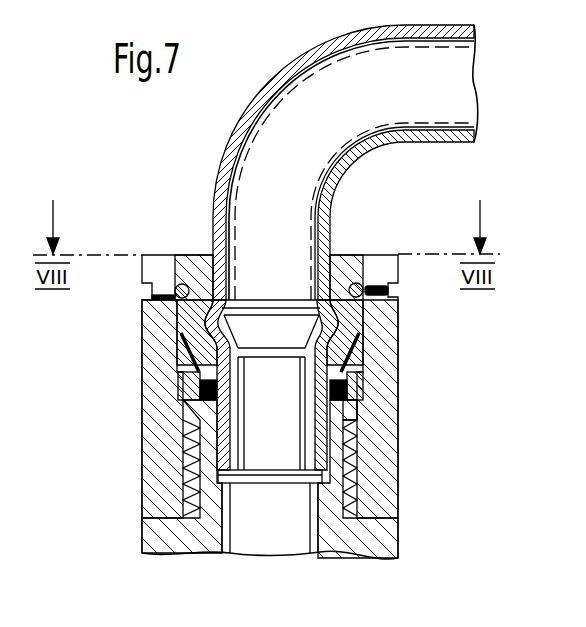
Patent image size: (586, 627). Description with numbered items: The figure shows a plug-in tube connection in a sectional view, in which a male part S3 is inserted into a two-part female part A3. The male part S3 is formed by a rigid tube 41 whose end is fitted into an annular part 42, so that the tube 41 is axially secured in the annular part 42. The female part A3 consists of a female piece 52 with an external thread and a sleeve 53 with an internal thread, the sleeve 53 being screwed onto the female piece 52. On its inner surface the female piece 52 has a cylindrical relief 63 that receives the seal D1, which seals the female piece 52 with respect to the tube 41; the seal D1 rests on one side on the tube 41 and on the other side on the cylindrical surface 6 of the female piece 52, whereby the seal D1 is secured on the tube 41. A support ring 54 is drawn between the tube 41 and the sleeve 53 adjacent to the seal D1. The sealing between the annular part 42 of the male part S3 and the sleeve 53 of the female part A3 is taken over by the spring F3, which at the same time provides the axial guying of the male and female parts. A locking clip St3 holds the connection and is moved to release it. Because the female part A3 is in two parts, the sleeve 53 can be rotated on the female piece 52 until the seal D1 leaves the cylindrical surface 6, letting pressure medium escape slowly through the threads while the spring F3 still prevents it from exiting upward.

The rigid tube 41 is at (256, 122).
The annular part 42 is at (352, 255).
The female piece 52 is at (153, 553).
The sleeve 53 is at (150, 340).
The support ring 54 is at (185, 370).
The cylindrical surface 6 is at (205, 405).
The cylindrical relief 63 is at (355, 416).
The seal D1 is at (197, 396).
The locking clip St3 is at (152, 293).
The male part S3 is at (164, 170).
The female part A3 is at (110, 481).
The spring F3 is at (362, 350).